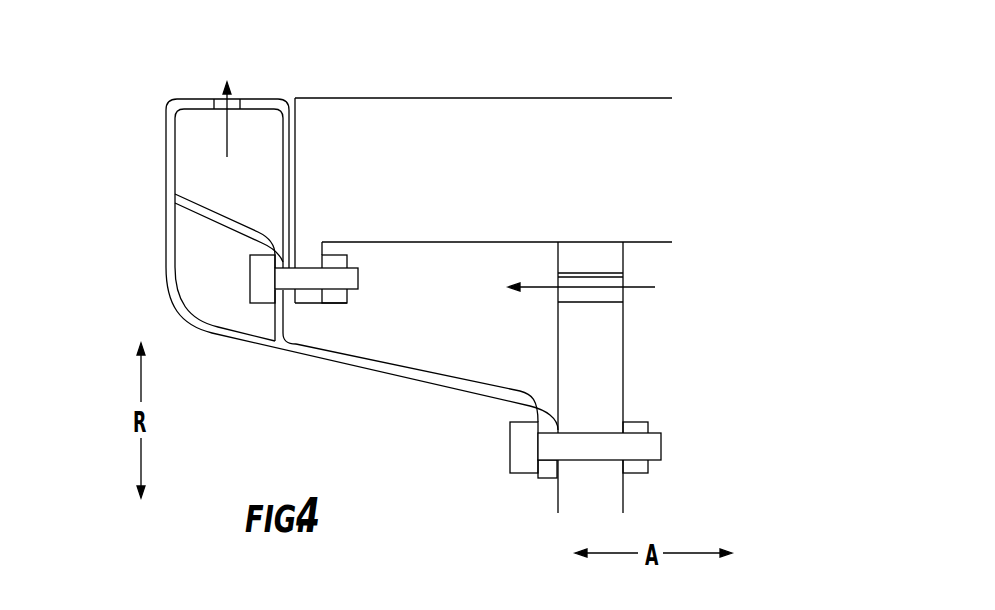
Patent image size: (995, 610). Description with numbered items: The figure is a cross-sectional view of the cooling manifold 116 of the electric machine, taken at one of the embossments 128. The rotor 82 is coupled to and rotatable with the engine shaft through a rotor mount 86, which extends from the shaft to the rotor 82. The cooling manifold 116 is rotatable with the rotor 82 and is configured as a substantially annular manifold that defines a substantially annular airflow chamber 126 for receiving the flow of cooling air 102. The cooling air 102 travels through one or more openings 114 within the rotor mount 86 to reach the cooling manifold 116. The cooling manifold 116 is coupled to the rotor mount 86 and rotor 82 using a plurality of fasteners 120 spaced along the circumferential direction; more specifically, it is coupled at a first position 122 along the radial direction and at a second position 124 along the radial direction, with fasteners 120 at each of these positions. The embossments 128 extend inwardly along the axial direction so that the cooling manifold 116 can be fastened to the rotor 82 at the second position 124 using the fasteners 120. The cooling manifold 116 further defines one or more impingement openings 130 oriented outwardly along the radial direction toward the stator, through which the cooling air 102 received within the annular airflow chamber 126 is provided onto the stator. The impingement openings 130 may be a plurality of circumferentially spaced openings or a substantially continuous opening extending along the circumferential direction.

The rotor 82 is at (532, 181).
The rotor mount 86 is at (608, 370).
The flow of cooling air 102 is at (228, 128).
The openings 114 is at (618, 300).
The cooling manifold 116 is at (165, 168).
The fasteners 120 is at (258, 287).
The first position 122 is at (484, 478).
The second position 124 is at (213, 274).
The substantially annular airflow chamber 126 is at (182, 140).
The embossments 128 is at (202, 247).
The impingement openings 130 is at (214, 91).